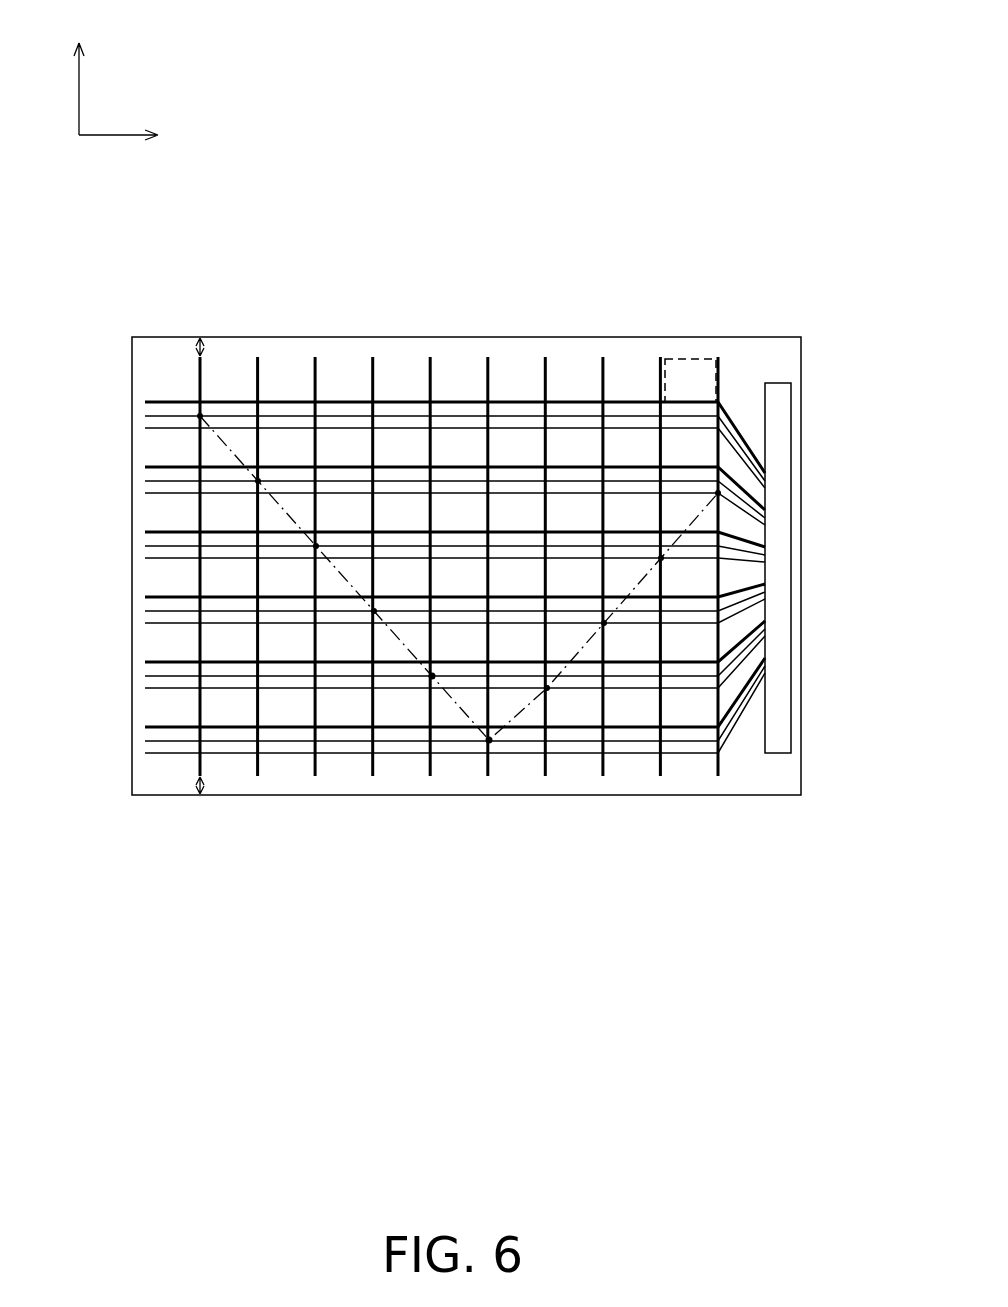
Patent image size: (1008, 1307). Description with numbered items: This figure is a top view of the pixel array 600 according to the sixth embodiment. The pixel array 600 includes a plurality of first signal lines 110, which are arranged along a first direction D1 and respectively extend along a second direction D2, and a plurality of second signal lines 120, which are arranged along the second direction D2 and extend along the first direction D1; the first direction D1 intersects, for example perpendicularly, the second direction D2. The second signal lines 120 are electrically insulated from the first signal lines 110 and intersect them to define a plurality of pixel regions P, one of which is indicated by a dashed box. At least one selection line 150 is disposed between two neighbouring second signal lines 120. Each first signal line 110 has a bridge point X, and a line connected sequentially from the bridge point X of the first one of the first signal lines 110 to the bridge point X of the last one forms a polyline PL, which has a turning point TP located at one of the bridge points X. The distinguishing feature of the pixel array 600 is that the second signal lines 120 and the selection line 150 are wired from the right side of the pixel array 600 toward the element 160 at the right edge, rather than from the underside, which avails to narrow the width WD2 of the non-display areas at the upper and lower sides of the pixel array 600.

The pixel array 600 is at (744, 253).
The first signal line 110 is at (654, 340).
The second signal line 120 is at (126, 407).
The selection line 150 is at (126, 433).
The driver circuit 160 is at (777, 522).
The pixel region P is at (690, 358).
The width of the non-display areas of the upper and lower sides WD2 is at (199, 346).
The bridge point X is at (417, 678).
The turning point TP is at (474, 744).
The polyline PL is at (531, 705).
The first direction D1 is at (136, 137).
The second direction D2 is at (77, 69).